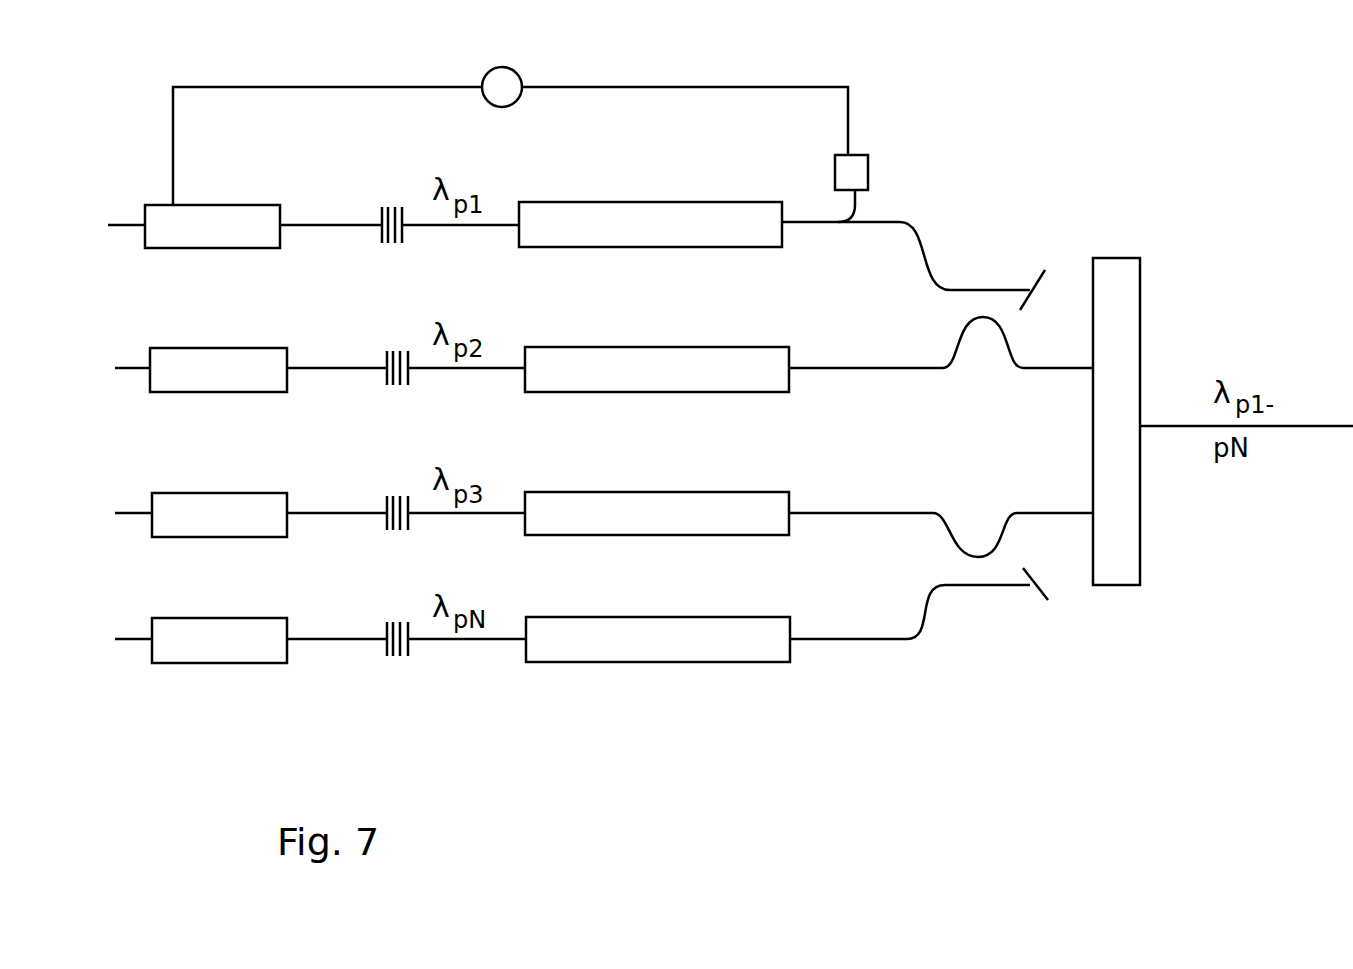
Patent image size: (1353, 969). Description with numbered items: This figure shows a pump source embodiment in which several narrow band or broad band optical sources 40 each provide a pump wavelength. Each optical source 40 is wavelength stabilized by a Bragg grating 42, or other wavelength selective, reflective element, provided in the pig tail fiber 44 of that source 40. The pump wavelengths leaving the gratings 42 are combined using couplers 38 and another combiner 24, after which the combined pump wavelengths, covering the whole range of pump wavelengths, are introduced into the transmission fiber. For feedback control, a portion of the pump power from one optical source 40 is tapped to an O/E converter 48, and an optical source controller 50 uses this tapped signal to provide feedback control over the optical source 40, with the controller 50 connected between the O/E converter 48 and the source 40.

The combiner 24 is at (1142, 297).
The coupler 38 is at (985, 320).
The optical source 40 is at (150, 628).
The Bragg grating 42 is at (398, 620).
The pig tail fiber 44 is at (328, 637).
The O/E converter 48 is at (872, 173).
The optical source controller 50 is at (563, 617).